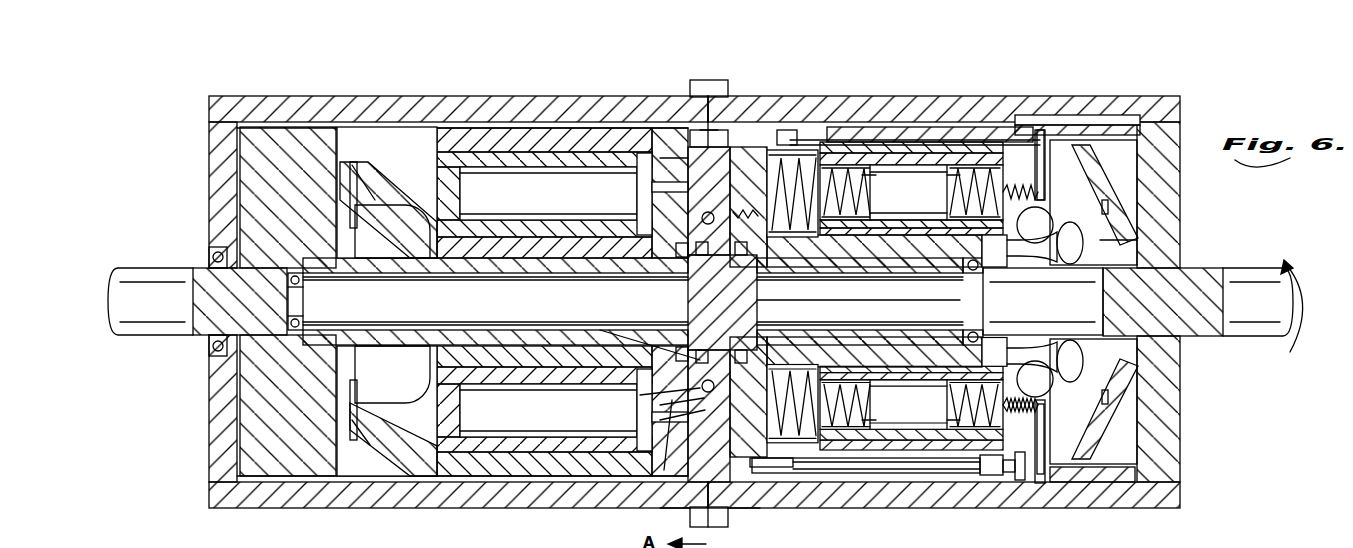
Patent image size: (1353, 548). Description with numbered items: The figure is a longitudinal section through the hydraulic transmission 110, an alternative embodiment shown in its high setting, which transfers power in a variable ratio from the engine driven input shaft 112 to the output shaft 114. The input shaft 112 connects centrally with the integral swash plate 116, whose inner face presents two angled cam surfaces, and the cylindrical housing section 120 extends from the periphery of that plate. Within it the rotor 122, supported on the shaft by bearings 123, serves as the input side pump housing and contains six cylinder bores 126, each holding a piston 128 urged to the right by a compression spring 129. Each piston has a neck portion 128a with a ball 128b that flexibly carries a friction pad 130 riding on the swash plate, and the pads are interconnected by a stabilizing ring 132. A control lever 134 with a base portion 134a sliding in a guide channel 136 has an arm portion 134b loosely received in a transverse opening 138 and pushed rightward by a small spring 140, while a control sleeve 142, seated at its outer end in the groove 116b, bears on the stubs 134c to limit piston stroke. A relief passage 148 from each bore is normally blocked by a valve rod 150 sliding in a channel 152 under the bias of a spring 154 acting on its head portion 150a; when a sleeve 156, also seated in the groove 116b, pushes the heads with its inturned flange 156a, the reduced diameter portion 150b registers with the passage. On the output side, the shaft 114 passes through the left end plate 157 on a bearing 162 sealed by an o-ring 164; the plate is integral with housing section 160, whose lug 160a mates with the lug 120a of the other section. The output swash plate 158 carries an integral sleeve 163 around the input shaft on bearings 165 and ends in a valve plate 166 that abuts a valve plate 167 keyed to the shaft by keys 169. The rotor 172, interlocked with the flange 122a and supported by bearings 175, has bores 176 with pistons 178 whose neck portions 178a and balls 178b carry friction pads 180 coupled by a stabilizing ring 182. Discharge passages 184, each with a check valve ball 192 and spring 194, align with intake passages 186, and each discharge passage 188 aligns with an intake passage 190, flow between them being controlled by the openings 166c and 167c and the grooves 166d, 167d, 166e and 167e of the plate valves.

The hydraulic transmission 110 is at (1250, 390).
The input shaft 112 is at (1245, 267).
The output shaft 114 is at (137, 267).
The swash plate 116 is at (1162, 158).
The groove 116b is at (1160, 120).
The housing section 120 is at (760, 106).
The lug 120a is at (730, 512).
The rotor 122 is at (945, 282).
The semicircular flange 122a is at (702, 135).
The bearings 123 is at (968, 273).
The cylinder bores 126 is at (820, 225).
The piston 128 is at (868, 215).
The neck portion 128a is at (1010, 272).
The ball 128b is at (1100, 195).
The compression spring 129 is at (868, 182).
The friction pad 130 is at (1110, 195).
The stabilizing ring 132 is at (1100, 245).
The control lever 134 is at (985, 125).
The base portion 134a is at (870, 125).
The arm portion 134b is at (1044, 170).
The stub 134c is at (1040, 128).
The guide channel 136 is at (792, 132).
The transverse opening 138 is at (1040, 208).
The compression spring 140 is at (960, 225).
The control sleeve 142 is at (1082, 124).
The relief passage 148 is at (830, 473).
The valve rod 150 is at (925, 474).
The enlarged head portion 150a is at (1008, 473).
The reduced diameter portion 150b is at (870, 474).
The channel 152 is at (785, 467).
The compression spring 154 is at (985, 476).
The sleeve 156 is at (1120, 483).
The inturned flange 156a is at (1020, 481).
The left end plate 157 is at (215, 150).
The swash plate 158 is at (245, 398).
The housing section 160 is at (447, 108).
The lug 160a is at (692, 512).
The bearing 162 is at (208, 257).
The sleeve 163 is at (520, 275).
The o-ring 164 is at (208, 346).
The bearings 165 is at (303, 318).
The valve plate 166 is at (652, 190).
The arcuate openings 166c is at (660, 420).
The curved grooves 166d is at (640, 396).
The curved groove 166e is at (675, 160).
The valve plate 167 is at (758, 270).
The arcuate openings 167c is at (660, 405).
The curved grooves 167d is at (640, 340).
The curved groove 167e is at (712, 100).
The keys 169 is at (722, 302).
The rotor 172 is at (505, 165).
The bearings 175 is at (448, 273).
The cylindrical bores 176 is at (637, 180).
The piston 178 is at (548, 170).
The neck portion 178a is at (362, 195).
The ball 178b is at (355, 165).
The friction pad 180 is at (345, 190).
The stabilizing ring 182 is at (352, 236).
The discharge passages 184 is at (790, 228).
The intake passages 186 is at (708, 225).
The discharge passage 188 is at (664, 470).
The intake passage 190 is at (762, 165).
The valve ball 192 is at (768, 368).
The spring 194 is at (775, 322).